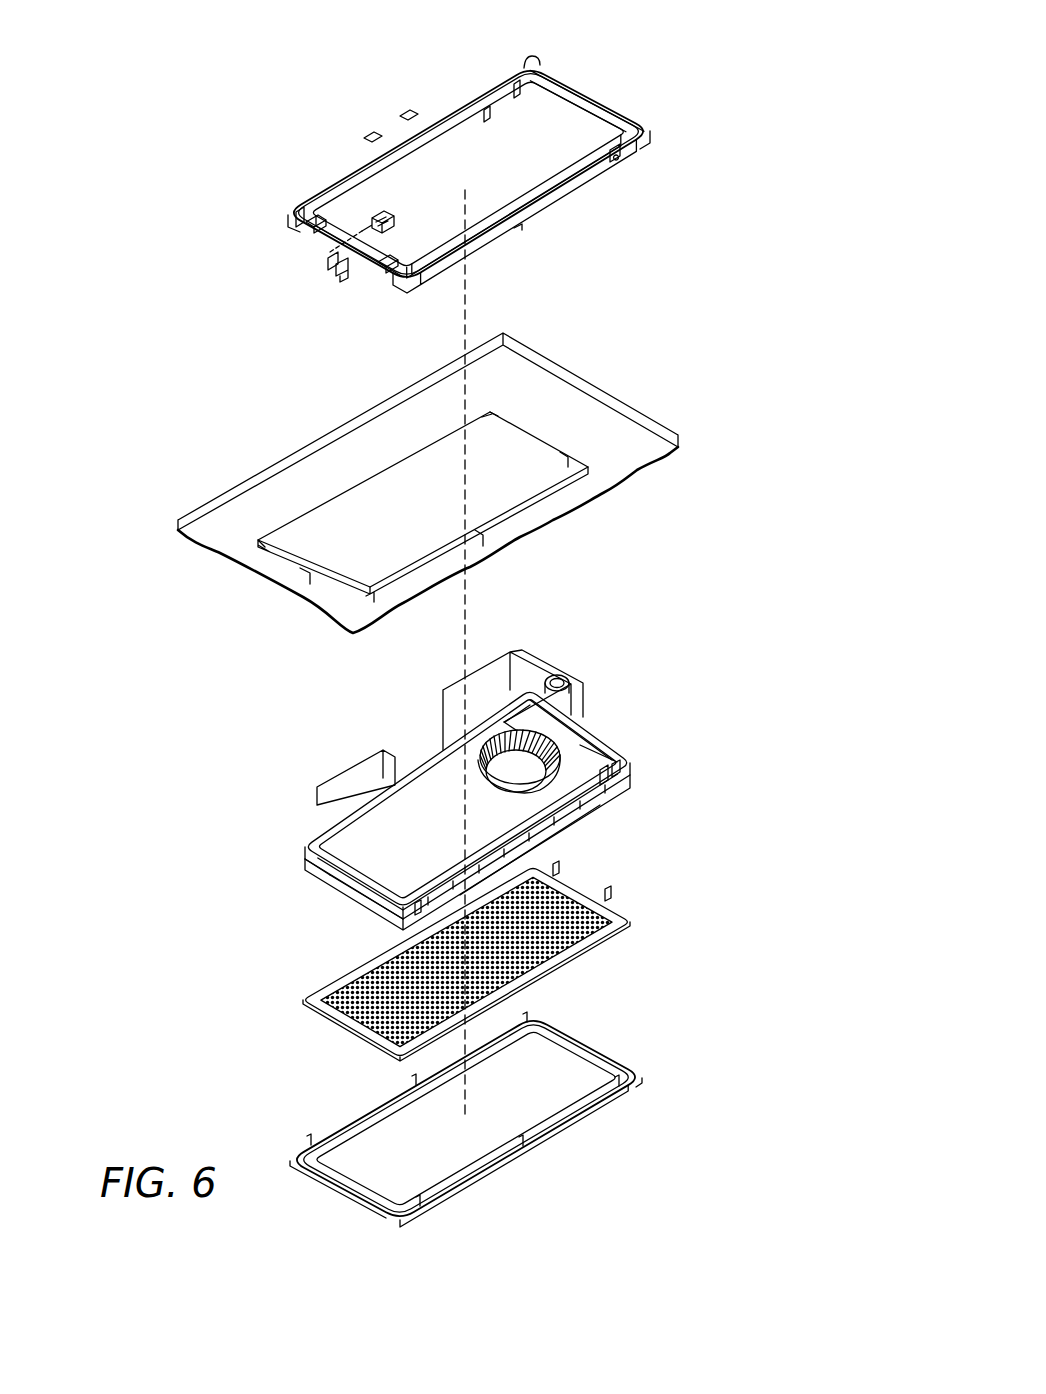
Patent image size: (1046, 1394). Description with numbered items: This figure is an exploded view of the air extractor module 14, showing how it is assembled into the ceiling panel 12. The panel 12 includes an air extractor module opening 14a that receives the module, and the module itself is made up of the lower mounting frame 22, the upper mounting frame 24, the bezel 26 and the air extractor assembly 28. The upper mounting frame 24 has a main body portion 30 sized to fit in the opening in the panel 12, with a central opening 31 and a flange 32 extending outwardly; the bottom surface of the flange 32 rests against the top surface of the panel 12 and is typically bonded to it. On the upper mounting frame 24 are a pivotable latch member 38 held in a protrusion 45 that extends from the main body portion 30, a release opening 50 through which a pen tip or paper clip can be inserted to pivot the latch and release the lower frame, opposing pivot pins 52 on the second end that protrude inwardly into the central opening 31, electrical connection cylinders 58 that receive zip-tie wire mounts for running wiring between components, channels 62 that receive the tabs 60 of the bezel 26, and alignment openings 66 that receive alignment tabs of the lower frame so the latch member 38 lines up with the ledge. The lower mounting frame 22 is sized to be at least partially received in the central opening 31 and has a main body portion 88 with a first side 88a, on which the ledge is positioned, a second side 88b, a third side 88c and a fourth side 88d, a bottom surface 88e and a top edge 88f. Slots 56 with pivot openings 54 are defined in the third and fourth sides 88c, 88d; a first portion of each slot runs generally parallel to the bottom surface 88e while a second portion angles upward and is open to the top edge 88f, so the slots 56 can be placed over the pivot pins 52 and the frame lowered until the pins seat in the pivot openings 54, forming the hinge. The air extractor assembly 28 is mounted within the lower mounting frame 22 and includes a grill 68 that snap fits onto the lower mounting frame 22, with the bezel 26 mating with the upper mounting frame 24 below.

The panel 12 is at (630, 443).
The air extractor module 14 is at (745, 147).
The air extractor module opening 14a is at (372, 542).
The lower mounting frame 22 is at (310, 843).
The upper mounting frame 24 is at (655, 83).
The bezel 26 is at (595, 1042).
The air extractor assembly 28 is at (453, 705).
The main body portion 30 is at (562, 192).
The central opening 31 is at (446, 155).
The flange 32 is at (582, 101).
The latch member 38 is at (395, 214).
The protrusion 45 is at (330, 266).
The release opening 50 is at (341, 278).
The pivot pins 52 is at (614, 157).
The pivot openings 54 is at (612, 783).
The slots 56 is at (590, 815).
The electrical connection cylinders 58 is at (543, 60).
The tabs 60 is at (308, 1138).
The channels 62 is at (516, 95).
The alignment openings 66 is at (312, 230).
The grill 68 is at (625, 925).
The main body portion 88 is at (632, 772).
The first side 88a is at (343, 878).
The second side 88b is at (612, 760).
The third side 88c is at (405, 787).
The fourth side 88d is at (553, 823).
The bottom surface 88e is at (313, 858).
The top edge 88f is at (595, 740).